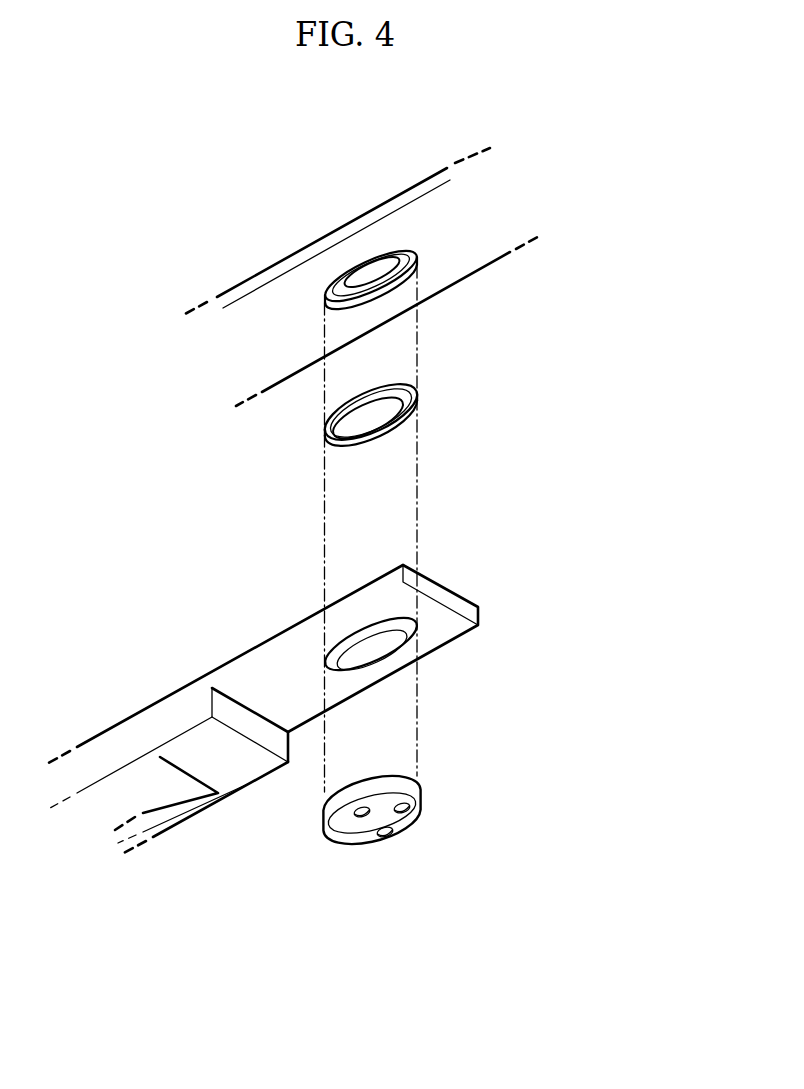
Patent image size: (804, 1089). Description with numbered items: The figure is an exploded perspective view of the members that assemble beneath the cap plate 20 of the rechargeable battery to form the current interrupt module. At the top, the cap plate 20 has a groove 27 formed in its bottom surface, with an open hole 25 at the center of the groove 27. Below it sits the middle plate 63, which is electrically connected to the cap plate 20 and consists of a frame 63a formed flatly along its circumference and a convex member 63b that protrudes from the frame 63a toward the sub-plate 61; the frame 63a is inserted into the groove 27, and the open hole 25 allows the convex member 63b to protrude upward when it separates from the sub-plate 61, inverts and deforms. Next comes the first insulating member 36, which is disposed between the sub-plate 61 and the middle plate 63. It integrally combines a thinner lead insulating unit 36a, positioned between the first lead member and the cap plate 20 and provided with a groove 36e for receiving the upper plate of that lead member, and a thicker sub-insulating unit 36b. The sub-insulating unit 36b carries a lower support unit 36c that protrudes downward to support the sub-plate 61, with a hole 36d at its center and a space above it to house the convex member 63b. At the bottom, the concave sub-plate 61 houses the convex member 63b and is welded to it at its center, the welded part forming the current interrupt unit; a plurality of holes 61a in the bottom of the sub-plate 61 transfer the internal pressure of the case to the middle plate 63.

The cap plate 20 is at (459, 288).
The open hole 25 is at (380, 263).
The groove 27 is at (333, 288).
The first insulating member 36 is at (452, 600).
The lead insulating unit 36a is at (236, 772).
The sub-insulating unit 36b is at (290, 665).
The lower support unit 36c is at (447, 645).
The hole 36d is at (393, 658).
The groove 36e is at (170, 808).
The sub-plate 61 is at (418, 800).
The holes 61a is at (384, 836).
The middle plate 63 is at (392, 438).
The frame 63a is at (414, 407).
The convex member 63b is at (368, 435).